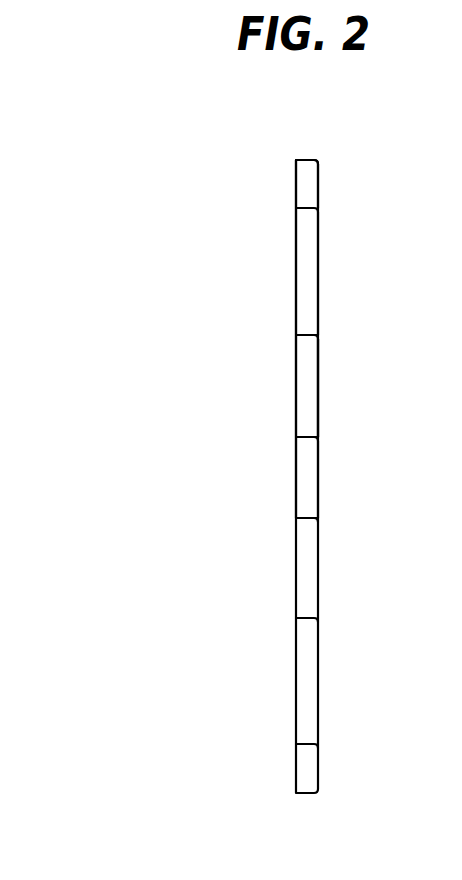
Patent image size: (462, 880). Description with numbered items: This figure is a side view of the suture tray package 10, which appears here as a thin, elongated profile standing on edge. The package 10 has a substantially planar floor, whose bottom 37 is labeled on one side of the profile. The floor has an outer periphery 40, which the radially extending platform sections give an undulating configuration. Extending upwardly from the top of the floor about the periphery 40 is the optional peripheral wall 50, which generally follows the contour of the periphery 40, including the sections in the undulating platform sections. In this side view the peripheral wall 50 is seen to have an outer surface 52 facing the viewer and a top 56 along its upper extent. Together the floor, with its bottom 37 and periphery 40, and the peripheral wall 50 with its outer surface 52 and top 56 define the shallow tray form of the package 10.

The suture tray package 10 is at (317, 444).
The outer periphery 40 is at (296, 160).
The top 56 is at (296, 328).
The peripheral wall 50 is at (296, 394).
The bottom 37 is at (320, 400).
The outer surface 52 is at (307, 479).